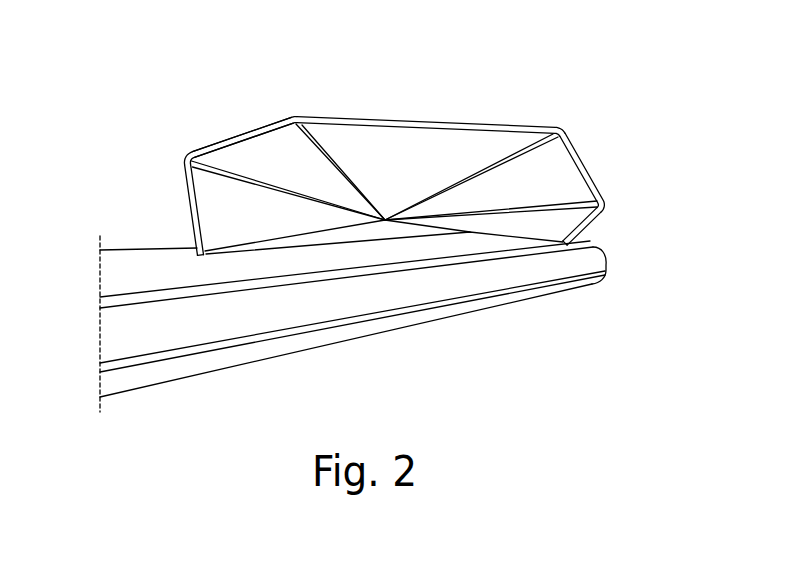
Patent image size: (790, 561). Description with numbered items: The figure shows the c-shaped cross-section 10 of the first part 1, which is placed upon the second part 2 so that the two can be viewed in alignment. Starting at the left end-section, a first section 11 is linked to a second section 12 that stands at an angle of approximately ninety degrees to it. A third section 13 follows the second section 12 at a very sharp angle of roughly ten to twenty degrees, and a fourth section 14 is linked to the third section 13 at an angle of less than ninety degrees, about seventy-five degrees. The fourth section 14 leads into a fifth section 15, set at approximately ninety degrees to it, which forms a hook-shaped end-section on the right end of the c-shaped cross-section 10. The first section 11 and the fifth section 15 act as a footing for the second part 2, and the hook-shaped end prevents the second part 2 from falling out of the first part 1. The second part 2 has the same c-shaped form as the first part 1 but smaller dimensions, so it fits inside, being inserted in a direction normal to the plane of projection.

The first part 1 is at (384, 95).
The second part 2 is at (124, 336).
The c-shaped cross-section 10 is at (264, 110).
The first section 11 is at (188, 195).
The second section 12 is at (215, 145).
The third section 13 is at (465, 126).
The fourth section 14 is at (580, 160).
The fifth section 15 is at (602, 219).